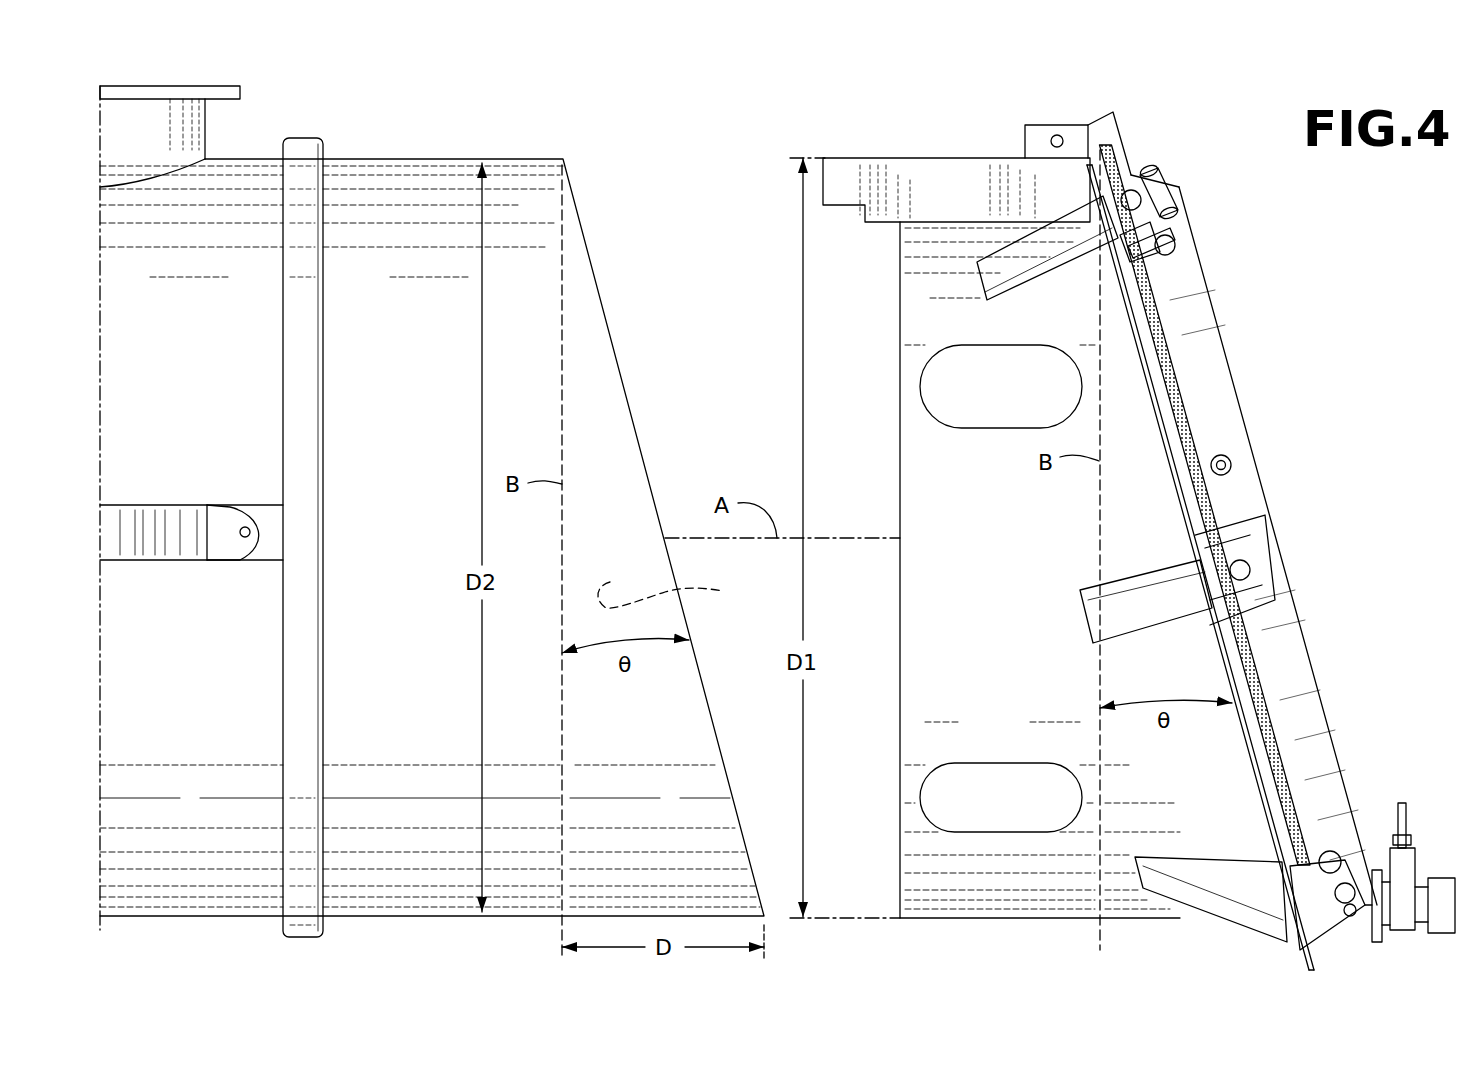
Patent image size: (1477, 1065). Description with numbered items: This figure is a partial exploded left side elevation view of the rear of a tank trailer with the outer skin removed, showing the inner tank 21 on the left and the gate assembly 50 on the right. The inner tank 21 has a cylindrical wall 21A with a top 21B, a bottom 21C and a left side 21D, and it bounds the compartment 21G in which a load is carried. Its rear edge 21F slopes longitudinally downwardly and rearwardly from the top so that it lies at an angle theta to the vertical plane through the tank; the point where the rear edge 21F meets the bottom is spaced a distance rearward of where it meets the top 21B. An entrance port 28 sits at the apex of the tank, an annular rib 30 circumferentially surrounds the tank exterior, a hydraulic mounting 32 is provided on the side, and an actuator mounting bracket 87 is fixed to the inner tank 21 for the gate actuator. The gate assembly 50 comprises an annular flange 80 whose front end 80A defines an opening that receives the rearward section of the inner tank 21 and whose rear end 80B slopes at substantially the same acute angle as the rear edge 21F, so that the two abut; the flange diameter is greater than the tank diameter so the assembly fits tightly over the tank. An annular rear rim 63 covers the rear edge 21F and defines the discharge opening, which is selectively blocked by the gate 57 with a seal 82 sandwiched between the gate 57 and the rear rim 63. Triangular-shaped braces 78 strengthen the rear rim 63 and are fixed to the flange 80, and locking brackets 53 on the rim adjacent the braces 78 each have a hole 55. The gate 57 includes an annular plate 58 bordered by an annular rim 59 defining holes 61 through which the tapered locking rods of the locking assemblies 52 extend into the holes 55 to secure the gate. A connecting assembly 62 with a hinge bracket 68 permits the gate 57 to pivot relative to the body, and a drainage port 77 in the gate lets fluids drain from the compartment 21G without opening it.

The inner tank 21 is at (528, 140).
The cylindrical wall 21A is at (595, 430).
The top 21B is at (372, 150).
The bottom 21C is at (450, 925).
The left side 21D is at (600, 520).
The rear edge 21F is at (616, 352).
The compartment 21G is at (685, 593).
The entrance port 28 is at (208, 118).
The annular rib 30 is at (300, 380).
The hydraulic mounting 32 is at (182, 518).
The actuator mounting bracket 87 is at (230, 543).
The gate assembly 50 is at (914, 128).
The locking assembly 52 is at (1172, 272).
The locking bracket 53 is at (1121, 168).
The hole 55 is at (1133, 193).
The gate 57 is at (1302, 617).
The annular plate 58 is at (1207, 512).
The annular rim 59 is at (1228, 395).
The hole 61 is at (1166, 258).
The connecting assembly 62 is at (1062, 115).
The annular rear rim 63 is at (1252, 760).
The hinge bracket 68 is at (1116, 124).
The drainage port 77 is at (1436, 878).
The triangular-shaped brace 78 is at (1070, 285).
The annular flange 80 is at (958, 586).
The front end 80A is at (900, 505).
The rear end 80B is at (1183, 437).
The seal 82 is at (1258, 708).